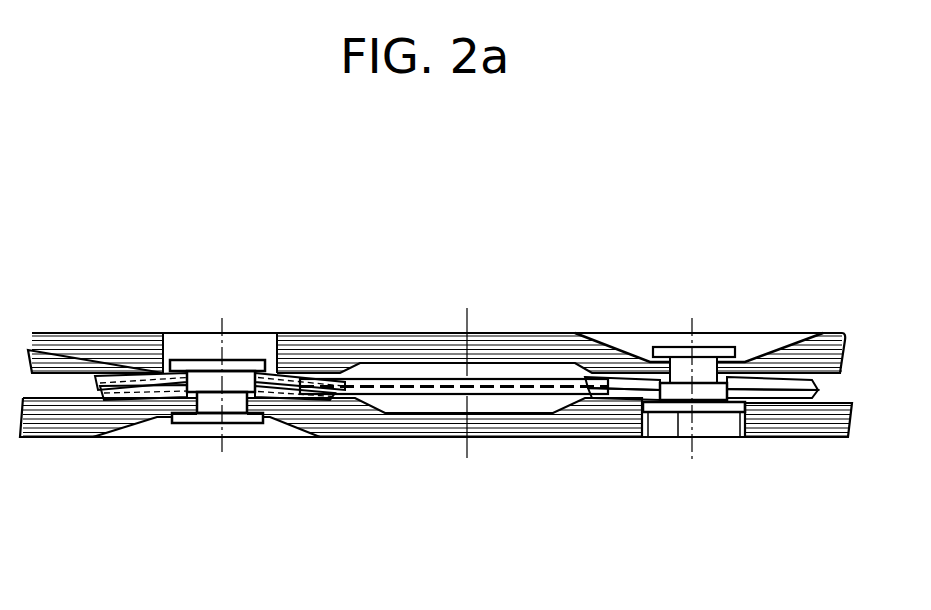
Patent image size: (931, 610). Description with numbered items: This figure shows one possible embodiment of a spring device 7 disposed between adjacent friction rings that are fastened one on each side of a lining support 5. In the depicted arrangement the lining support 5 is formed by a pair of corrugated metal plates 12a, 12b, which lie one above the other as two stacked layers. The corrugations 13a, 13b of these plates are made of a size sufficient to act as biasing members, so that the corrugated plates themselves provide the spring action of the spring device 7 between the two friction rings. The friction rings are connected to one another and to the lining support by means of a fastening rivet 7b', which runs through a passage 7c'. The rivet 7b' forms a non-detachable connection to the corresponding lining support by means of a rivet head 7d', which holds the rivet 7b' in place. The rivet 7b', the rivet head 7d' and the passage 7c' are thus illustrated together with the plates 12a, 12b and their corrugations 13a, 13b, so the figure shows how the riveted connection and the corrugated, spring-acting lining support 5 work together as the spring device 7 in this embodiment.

The lining support 5 is at (418, 372).
The spring device 7 is at (250, 313).
The fastening rivet 7b' is at (689, 496).
The passage 7c' is at (708, 464).
The rivet head 7d' is at (684, 462).
The corrugated metal plate 12a is at (330, 380).
The corrugated metal plate 12b is at (356, 395).
The corrugation 13a is at (128, 380).
The corrugation 13b is at (110, 400).